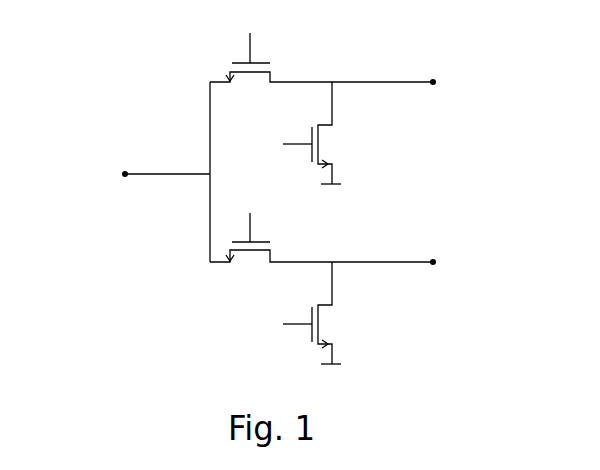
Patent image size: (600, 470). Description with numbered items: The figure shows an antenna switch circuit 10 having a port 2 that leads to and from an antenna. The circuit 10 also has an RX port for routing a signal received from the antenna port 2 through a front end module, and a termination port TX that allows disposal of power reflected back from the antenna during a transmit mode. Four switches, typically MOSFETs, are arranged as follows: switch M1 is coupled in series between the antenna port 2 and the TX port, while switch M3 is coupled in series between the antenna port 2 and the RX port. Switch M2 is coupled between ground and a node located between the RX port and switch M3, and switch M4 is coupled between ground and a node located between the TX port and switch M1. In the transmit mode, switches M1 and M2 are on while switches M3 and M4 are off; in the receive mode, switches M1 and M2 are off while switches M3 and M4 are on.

The antenna port 2 is at (115, 165).
The circuit 10 is at (496, 133).
The switch M1 is at (321, 256).
The switch M2 is at (334, 133).
The switch M3 is at (321, 77).
The switch M4 is at (334, 313).